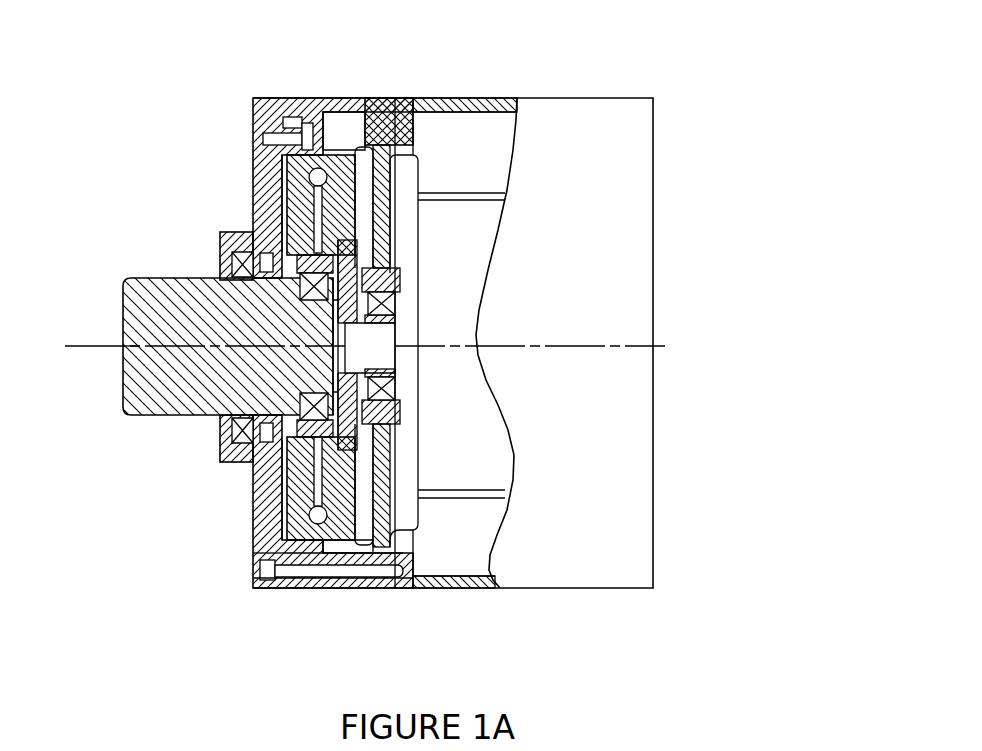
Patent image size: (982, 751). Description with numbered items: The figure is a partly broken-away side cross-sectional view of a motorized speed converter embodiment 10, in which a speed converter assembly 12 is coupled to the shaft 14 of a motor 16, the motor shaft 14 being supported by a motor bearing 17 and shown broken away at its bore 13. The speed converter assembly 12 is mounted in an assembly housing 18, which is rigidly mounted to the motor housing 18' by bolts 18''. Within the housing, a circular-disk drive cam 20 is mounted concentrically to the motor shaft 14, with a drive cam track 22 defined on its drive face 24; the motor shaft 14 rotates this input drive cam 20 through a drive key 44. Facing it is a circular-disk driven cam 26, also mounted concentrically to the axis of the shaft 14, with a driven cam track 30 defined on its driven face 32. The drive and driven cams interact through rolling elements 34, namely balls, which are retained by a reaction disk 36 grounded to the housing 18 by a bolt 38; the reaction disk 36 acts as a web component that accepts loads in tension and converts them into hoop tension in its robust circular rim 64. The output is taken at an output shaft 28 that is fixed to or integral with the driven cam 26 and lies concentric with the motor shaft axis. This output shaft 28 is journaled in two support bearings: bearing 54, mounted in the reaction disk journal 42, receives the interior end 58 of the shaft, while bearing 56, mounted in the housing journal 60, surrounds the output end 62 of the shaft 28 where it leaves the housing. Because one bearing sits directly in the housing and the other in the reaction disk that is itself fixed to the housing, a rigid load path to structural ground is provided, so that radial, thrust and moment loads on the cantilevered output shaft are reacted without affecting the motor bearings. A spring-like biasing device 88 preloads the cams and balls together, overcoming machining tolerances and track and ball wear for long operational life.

The motorized speed converter embodiment 10 is at (656, 266).
The speed converter assembly 12 is at (293, 594).
The shaft bore 13 is at (409, 359).
The motor shaft 14 is at (353, 379).
The motor 16 is at (462, 409).
The motor bearing 17 is at (389, 401).
The assembly housing 18 is at (281, 296).
The motor housing 18' is at (569, 390).
The bolts 18'' is at (291, 630).
The drive cam 20 is at (358, 229).
The drive cam track 22 is at (387, 131).
The drive face 24 is at (401, 151).
The driven cam 26 is at (302, 217).
The output shaft 28 is at (151, 280).
The driven cam track 30 is at (318, 162).
The driven face 32 is at (296, 167).
The rolling elements 34 is at (312, 163).
The reaction disk 36 is at (300, 121).
The bolt 38 is at (326, 168).
The reaction disk journal 42 is at (283, 447).
The drive key 44 is at (397, 394).
The support bearing 54 is at (297, 412).
The support bearing 56 is at (240, 250).
The interior end 58 is at (297, 364).
The housing journal 60 is at (244, 245).
The output end 62 is at (128, 351).
The circular rim 64 is at (308, 591).
The spring-like biasing device 88 is at (218, 262).